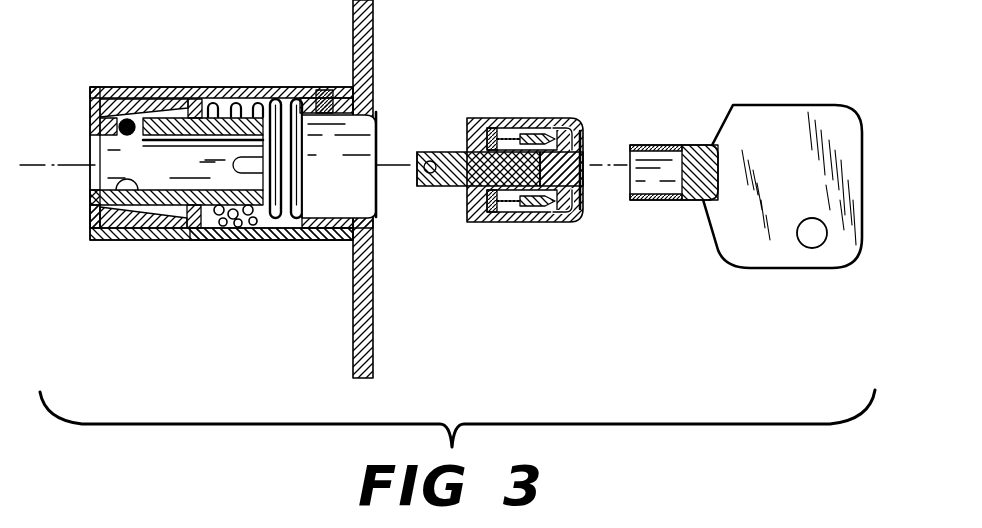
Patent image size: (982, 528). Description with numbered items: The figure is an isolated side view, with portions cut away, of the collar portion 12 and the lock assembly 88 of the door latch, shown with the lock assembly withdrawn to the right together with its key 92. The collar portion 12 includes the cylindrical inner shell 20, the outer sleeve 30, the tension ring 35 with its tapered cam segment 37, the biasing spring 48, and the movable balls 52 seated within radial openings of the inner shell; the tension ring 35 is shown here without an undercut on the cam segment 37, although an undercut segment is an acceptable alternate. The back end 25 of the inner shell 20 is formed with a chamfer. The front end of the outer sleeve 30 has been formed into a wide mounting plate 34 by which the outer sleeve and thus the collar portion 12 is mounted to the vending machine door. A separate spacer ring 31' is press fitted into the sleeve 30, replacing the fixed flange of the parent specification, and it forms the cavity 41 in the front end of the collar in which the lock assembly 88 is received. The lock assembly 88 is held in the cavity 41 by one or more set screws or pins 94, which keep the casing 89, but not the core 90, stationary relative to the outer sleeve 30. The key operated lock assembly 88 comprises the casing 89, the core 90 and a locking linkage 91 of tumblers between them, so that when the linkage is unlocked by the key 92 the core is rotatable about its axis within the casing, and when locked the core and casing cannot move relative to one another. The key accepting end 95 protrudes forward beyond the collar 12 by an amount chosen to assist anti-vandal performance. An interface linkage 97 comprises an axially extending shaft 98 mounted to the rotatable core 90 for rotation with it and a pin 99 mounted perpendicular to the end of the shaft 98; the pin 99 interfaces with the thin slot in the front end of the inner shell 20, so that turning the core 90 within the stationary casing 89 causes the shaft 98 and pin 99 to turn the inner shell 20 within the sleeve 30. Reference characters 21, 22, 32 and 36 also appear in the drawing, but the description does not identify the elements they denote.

The collar portion 12 is at (113, 260).
The cylindrical inner shell 20 is at (197, 122).
The plug 21 is at (118, 166).
The wedge member 22 is at (173, 247).
The back end 25 is at (97, 200).
The outer sleeve 30 is at (163, 243).
The spacer ring 31' is at (333, 209).
The outer sleeve 32 is at (93, 218).
The mounting plate 34 is at (375, 28).
The tension ring 35 is at (125, 100).
The end wall 36 is at (93, 88).
The tapered cam segment 37 is at (172, 100).
The cavity 41 is at (350, 200).
The biasing spring 48 is at (222, 238).
The movable balls 52 is at (118, 138).
The lock assembly 88 is at (568, 228).
The casing 89 is at (565, 118).
The core 90 is at (522, 118).
The locking linkage 91 is at (515, 220).
The key 92 is at (662, 138).
The set screws 94 is at (322, 90).
The key accepting end 95 is at (590, 143).
The interface linkage 97 is at (440, 192).
The shaft 98 is at (270, 100).
The pin 99 is at (413, 150).